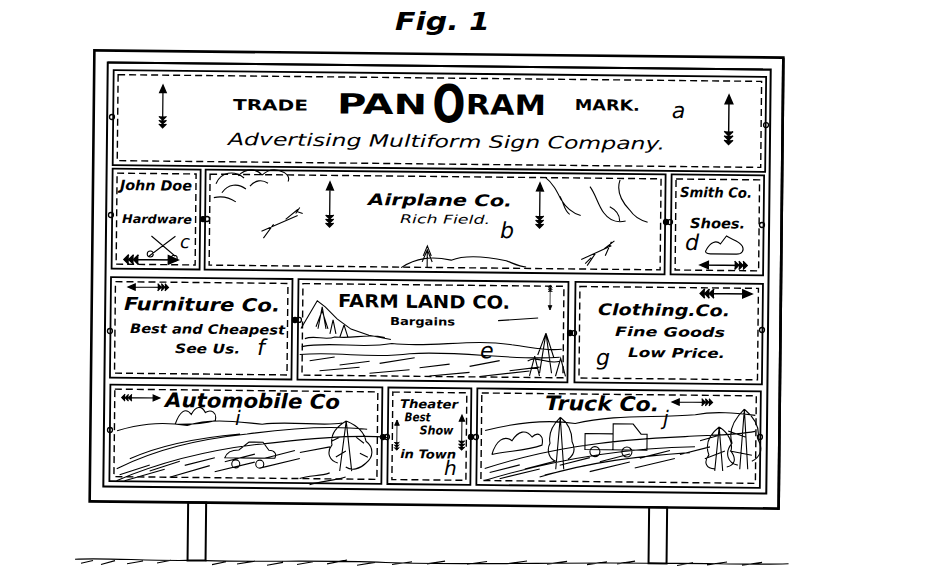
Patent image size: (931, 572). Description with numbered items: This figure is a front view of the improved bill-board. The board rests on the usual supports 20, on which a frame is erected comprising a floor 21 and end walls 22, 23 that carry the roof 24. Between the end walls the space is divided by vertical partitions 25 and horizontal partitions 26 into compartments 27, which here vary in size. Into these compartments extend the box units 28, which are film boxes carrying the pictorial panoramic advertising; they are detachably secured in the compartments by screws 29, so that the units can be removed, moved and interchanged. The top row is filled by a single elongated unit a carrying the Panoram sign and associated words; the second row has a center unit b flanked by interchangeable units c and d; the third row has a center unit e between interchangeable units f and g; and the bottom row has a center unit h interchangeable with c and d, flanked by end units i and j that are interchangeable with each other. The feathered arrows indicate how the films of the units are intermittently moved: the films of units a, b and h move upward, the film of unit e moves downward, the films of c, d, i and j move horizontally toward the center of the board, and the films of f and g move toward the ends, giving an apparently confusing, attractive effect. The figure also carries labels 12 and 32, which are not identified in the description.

The arrow indicator 12 is at (123, 263).
The supports 20 is at (193, 530).
The floor 21 is at (438, 500).
The end wall 22 is at (93, 294).
The end wall 23 is at (770, 282).
The roof 24 is at (583, 60).
The vertical partitions 25 is at (108, 308).
The horizontal partitions 26 is at (184, 172).
The compartments 27 is at (733, 75).
The box units 28 is at (684, 77).
The screws 29 is at (108, 120).
The direction arrow 32 is at (760, 93).